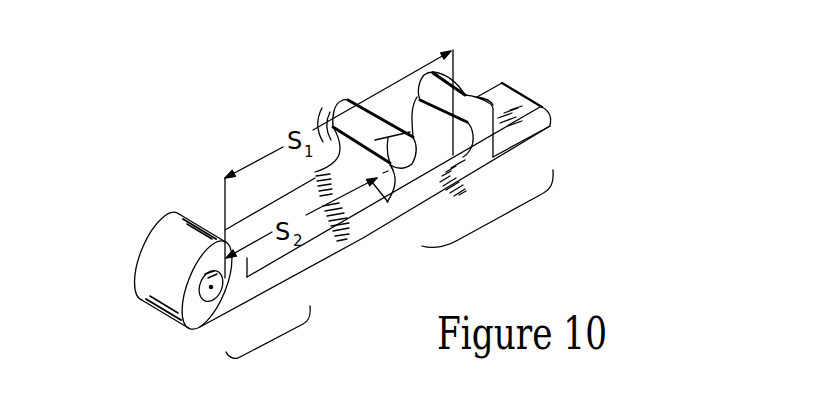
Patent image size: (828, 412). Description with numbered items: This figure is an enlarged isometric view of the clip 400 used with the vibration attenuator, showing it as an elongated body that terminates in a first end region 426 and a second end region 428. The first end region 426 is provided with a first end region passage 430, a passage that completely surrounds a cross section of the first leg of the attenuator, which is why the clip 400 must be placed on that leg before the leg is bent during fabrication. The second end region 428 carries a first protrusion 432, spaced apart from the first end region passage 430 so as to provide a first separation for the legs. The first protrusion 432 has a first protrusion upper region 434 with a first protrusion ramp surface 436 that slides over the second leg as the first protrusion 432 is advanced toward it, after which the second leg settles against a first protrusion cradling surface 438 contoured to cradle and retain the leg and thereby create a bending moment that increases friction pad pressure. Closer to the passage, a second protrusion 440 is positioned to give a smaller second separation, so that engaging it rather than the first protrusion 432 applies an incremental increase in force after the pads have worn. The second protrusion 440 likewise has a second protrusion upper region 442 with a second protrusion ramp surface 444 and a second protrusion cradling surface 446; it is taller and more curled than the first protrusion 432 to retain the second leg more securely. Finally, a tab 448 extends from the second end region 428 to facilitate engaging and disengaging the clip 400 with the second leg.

The clip 400 is at (177, 137).
The first end region 426 is at (283, 336).
The second end region 428 is at (497, 218).
The first end region passage 430 is at (211, 287).
The first protrusion 432 is at (465, 84).
The first protrusion upper region 434 is at (410, 98).
The first protrusion ramp surface 436 is at (460, 107).
The first protrusion cradling surface 438 is at (493, 156).
The second protrusion 440 is at (338, 94).
The second protrusion upper region 442 is at (320, 125).
The second protrusion ramp surface 444 is at (414, 138).
The second protrusion cradling surface 446 is at (392, 170).
The tab 448 is at (540, 100).